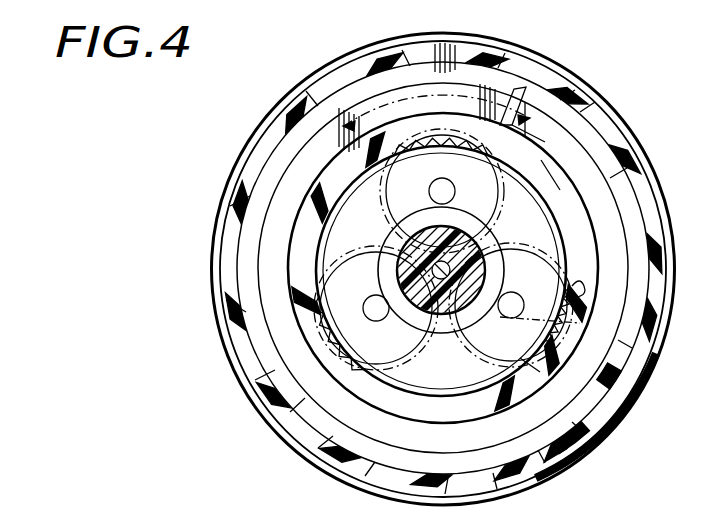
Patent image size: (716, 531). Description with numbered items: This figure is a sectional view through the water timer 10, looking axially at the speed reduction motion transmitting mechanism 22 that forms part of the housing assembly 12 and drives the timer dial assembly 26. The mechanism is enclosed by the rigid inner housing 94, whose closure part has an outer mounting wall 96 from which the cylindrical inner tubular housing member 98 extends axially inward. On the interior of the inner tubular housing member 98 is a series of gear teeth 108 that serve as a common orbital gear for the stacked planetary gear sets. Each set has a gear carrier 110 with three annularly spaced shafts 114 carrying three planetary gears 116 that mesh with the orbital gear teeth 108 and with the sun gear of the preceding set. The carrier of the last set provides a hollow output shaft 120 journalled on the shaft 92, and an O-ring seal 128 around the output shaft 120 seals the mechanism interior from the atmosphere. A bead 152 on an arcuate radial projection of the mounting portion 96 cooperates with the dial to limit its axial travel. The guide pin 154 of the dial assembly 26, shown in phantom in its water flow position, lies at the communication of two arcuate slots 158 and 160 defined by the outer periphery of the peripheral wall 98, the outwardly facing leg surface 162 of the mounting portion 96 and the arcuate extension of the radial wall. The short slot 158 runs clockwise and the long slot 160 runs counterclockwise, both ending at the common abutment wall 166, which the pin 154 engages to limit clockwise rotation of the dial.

The water timer 10 is at (243, 133).
The housing assembly 12 is at (513, 477).
The speed reduction motion transmitting mechanism 22 is at (330, 350).
The timer dial assembly 26 is at (533, 47).
The shaft 92 is at (458, 254).
The rigid inner housing 94 is at (287, 267).
The outer mounting wall 96 is at (363, 98).
The inner tubular housing member 98 is at (541, 160).
The gear teeth 108 is at (582, 292).
The gear carrier 110 is at (540, 246).
The shafts 114 is at (560, 325).
The planetary gears 116 is at (530, 368).
The hollow output shaft 120 is at (410, 247).
The O-ring seal 128 is at (445, 330).
The bead 152 is at (632, 348).
The guide pin 154 is at (470, 88).
The arcuate slot 158 is at (510, 90).
The arcuate slot 160 is at (347, 173).
The outwardly facing leg surface 162 is at (288, 200).
The common abutment wall 166 is at (523, 105).